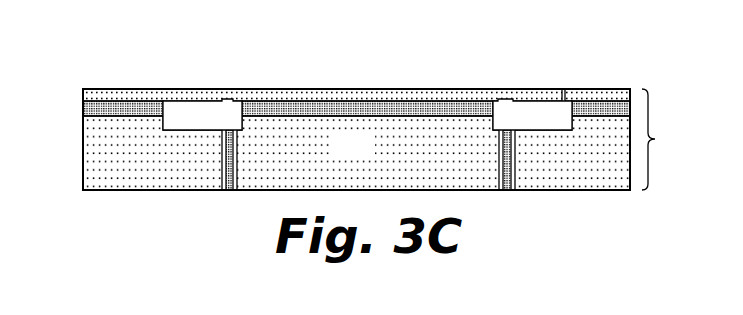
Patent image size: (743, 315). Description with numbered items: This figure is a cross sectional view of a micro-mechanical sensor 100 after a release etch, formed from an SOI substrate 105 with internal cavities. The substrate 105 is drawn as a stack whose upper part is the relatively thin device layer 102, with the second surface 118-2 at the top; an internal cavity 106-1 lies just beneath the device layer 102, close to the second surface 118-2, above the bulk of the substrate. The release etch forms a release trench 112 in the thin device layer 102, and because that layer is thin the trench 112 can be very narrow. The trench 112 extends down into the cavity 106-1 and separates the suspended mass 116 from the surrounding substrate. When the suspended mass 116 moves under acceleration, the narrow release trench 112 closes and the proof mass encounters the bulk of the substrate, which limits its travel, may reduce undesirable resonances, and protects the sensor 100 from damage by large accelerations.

The micro-mechanical sensor 100 is at (646, 52).
The device layer 102 is at (117, 94).
The substrate 105 is at (671, 139).
The internal cavity 106-1 is at (207, 115).
The release trench 112 is at (173, 95).
The suspended mass 116 is at (369, 152).
The second surface 118-2 is at (318, 88).